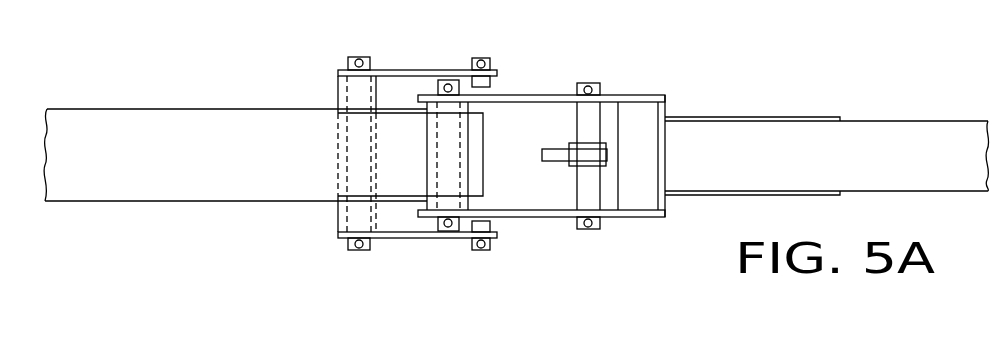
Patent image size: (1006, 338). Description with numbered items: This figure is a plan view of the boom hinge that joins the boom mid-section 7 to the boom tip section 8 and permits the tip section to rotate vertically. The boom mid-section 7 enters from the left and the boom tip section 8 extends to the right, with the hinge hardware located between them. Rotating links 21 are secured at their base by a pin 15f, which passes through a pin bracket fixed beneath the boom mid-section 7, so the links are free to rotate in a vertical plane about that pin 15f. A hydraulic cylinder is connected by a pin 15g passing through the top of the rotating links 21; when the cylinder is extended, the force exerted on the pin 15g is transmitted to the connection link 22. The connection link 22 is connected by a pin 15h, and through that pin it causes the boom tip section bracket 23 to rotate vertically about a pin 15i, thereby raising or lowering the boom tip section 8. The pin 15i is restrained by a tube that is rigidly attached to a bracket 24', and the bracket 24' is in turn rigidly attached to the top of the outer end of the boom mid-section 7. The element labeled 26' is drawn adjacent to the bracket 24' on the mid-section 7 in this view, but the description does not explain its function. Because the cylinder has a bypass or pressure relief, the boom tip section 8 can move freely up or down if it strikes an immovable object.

The boom mid-section 7 is at (233, 160).
The boom tip section 8 is at (821, 163).
The pin 15f is at (372, 34).
The pin 15g is at (498, 44).
The pin 15h is at (607, 66).
The pin 15i is at (462, 78).
The rotating links 21 is at (429, 70).
The connection link 22 is at (552, 148).
The boom tip section bracket 23 is at (552, 95).
The bracket 24' is at (410, 154).
The guide member 26' is at (329, 154).